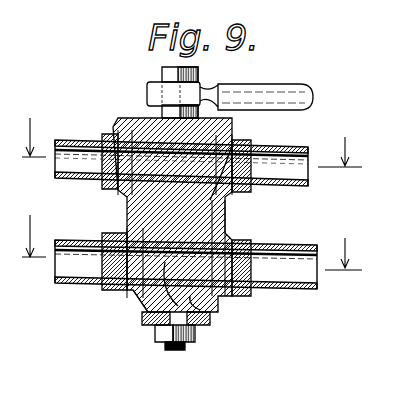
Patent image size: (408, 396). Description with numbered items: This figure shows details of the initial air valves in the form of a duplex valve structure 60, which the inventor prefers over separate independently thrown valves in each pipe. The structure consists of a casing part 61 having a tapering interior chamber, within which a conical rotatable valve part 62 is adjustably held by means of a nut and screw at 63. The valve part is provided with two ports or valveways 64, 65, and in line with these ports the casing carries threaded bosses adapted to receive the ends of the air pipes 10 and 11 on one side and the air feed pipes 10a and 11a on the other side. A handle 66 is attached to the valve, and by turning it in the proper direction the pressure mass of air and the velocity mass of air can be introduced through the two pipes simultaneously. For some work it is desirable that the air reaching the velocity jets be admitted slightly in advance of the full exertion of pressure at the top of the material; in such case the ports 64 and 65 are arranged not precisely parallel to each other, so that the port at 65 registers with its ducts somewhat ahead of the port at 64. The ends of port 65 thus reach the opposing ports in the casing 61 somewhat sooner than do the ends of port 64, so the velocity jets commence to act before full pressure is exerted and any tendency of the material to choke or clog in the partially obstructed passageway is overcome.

The air pipe 10 is at (305, 148).
The air feed pipe 10a is at (85, 145).
The air pipe 11 is at (290, 288).
The air feed pipe 11a is at (125, 292).
The duplex valve structure 60 is at (153, 215).
The casing part 61 is at (137, 293).
The conical rotatable valve part 62 is at (210, 312).
The nut and screw 63 is at (163, 347).
The port or valveway 64 is at (230, 200).
The port or valveway 65 is at (137, 307).
The handle 66 is at (316, 93).